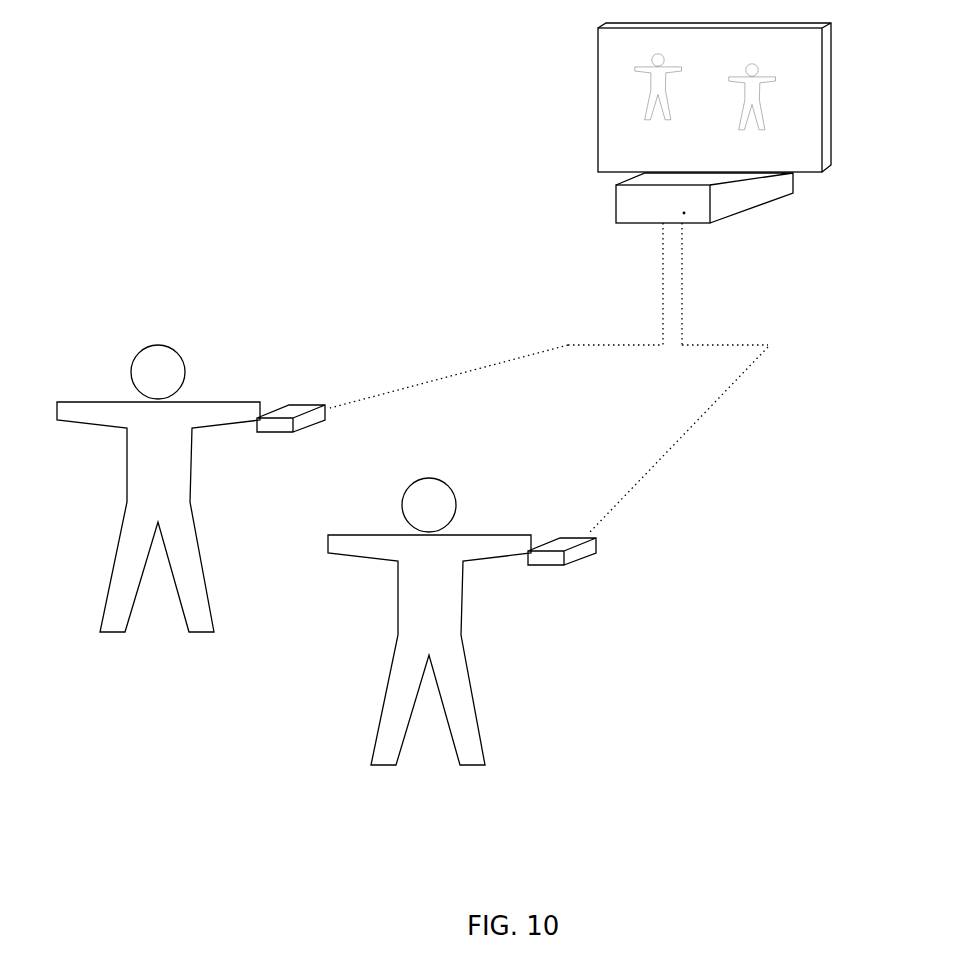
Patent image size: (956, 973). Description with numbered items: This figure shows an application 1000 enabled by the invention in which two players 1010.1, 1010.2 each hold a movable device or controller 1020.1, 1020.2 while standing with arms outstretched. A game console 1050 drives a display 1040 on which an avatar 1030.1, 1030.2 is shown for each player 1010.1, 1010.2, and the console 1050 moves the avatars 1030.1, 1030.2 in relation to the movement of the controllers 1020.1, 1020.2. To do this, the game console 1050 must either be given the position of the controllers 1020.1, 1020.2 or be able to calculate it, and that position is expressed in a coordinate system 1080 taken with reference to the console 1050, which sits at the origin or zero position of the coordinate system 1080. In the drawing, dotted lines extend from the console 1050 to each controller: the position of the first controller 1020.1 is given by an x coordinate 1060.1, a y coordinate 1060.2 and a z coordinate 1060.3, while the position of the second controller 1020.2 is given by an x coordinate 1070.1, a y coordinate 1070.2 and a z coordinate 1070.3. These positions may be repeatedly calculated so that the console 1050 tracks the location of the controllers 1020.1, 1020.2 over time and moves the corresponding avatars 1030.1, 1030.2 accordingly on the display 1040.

The multi-user gesture sensing system 1000 is at (331, 55).
The player 1010.1 is at (103, 525).
The player 1010.2 is at (488, 665).
The movable device or controller 1020.1 is at (307, 381).
The movable device or controller 1020.2 is at (587, 521).
The avatar 1030.1 is at (661, 101).
The avatar 1030.2 is at (754, 111).
The display 1040 is at (582, 83).
The game console 1050 is at (590, 201).
The x coordinate 1060.1 is at (571, 328).
The y coordinate 1060.2 is at (619, 277).
The z coordinate 1060.3 is at (412, 372).
The x coordinate 1070.1 is at (768, 328).
The y coordinate 1070.2 is at (730, 290).
The z coordinate 1070.3 is at (693, 441).
The coordinate system 1080 is at (694, 213).